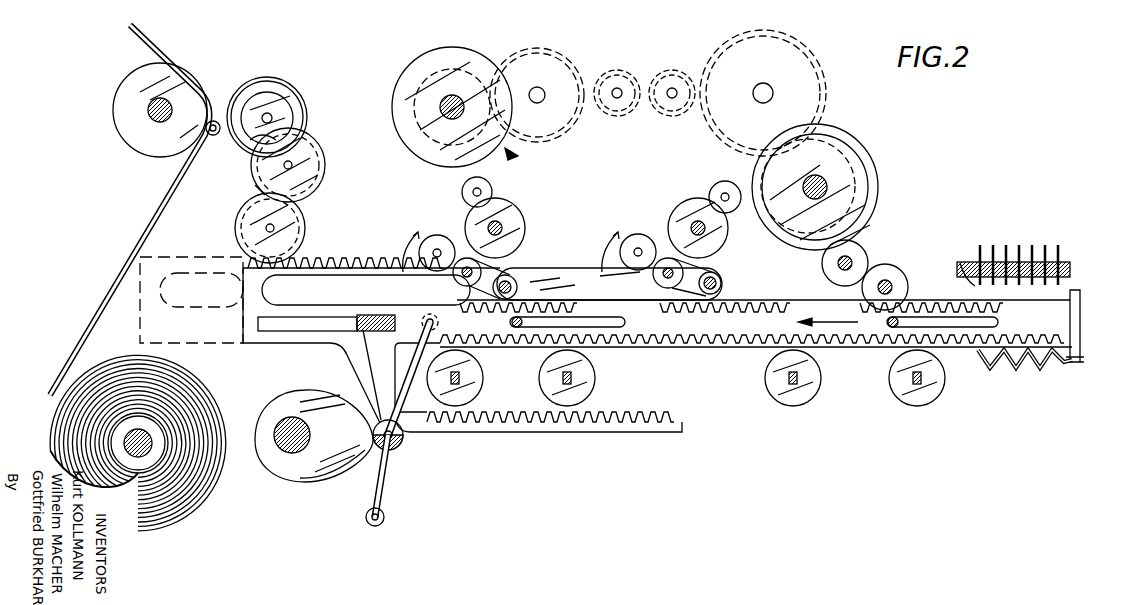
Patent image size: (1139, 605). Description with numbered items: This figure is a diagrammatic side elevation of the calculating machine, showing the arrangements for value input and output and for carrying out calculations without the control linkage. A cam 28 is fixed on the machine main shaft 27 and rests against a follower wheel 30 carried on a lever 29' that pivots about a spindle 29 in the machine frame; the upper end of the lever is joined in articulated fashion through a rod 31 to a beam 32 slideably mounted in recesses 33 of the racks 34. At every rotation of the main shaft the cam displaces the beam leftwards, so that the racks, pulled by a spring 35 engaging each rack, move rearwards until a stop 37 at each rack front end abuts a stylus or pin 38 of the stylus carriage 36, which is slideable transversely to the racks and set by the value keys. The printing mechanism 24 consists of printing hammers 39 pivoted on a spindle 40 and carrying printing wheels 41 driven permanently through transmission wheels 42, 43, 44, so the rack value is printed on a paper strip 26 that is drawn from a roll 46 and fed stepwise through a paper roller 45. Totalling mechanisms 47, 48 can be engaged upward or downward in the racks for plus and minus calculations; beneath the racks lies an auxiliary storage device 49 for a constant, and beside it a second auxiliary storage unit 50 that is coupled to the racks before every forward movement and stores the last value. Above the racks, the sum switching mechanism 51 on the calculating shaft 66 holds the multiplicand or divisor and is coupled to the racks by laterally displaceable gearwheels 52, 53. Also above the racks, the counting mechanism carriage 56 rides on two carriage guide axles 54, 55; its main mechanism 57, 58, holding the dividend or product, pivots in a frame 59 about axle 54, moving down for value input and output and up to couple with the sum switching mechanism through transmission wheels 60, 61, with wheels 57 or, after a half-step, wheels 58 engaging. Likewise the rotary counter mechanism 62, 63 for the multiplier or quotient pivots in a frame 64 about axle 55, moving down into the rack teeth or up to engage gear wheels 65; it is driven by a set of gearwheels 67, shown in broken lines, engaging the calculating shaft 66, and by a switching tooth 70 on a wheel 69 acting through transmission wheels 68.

The printing mechanism 24 is at (258, 134).
The paper strip 26 is at (150, 34).
The machine main shaft 27 is at (280, 446).
The cam 28 is at (328, 478).
The spindle 29 is at (358, 531).
The lever 29' is at (407, 476).
The follower wheel 30 is at (404, 441).
The rod 31 is at (420, 316).
The beam 32 is at (375, 333).
The recesses 33 is at (268, 333).
The racks 34 is at (712, 335).
The spring 35 is at (1035, 364).
The stylus carriage 36 is at (1070, 262).
The stop 37 is at (1082, 292).
The stylus or pin 38 is at (964, 275).
The printing hammers 39 is at (252, 172).
The spindle 40 is at (252, 228).
The printing wheels 41 is at (273, 80).
The transmission wheel 42 is at (292, 113).
The transmission wheel 43 is at (322, 150).
The transmission wheel 44 is at (293, 228).
The paper roller 45 is at (132, 124).
The roll 46 is at (190, 510).
The totalling mechanism 47 is at (597, 381).
The totalling mechanism 48 is at (485, 381).
The auxiliary storage device 49 is at (780, 389).
The second auxiliary storage unit 50 is at (896, 389).
The sum switching mechanism 51 is at (876, 168).
The laterally displaceable gearwheel 52 is at (860, 250).
The laterally displaceable gearwheel 53 is at (895, 272).
The carriage guide axle 54 is at (722, 285).
The carriage guide axle 55 is at (512, 276).
The counting mechanism carriage 56 is at (575, 270).
The main mechanism wheels 57 is at (653, 279).
The main mechanism wheels 58 is at (640, 236).
The frame 59 is at (703, 272).
The transmission wheel 60 is at (728, 230).
The transmission wheel 61 is at (725, 182).
The rotary counter mechanism 62 is at (458, 284).
The rotary counter mechanism 63 is at (420, 270).
The frame 64 is at (445, 238).
The gear wheels 65 is at (515, 210).
The calculating shaft 66 is at (806, 180).
The set of gearwheels 67 is at (580, 52).
The transmission wheels 68 is at (463, 192).
The wheel 69 is at (455, 58).
The switching tooth 70 is at (518, 156).